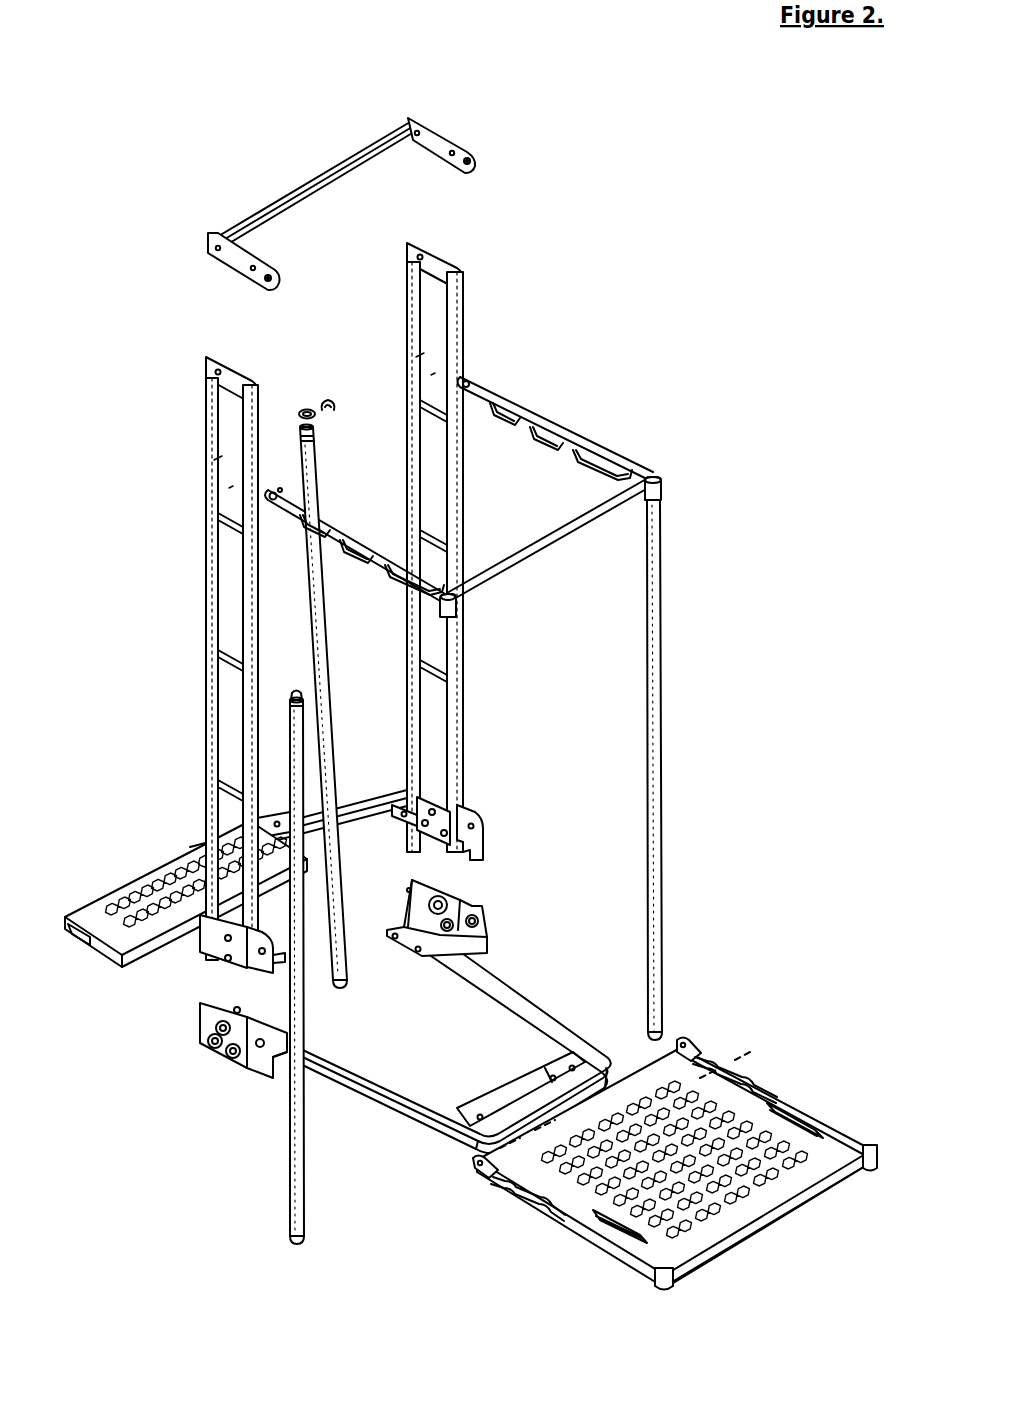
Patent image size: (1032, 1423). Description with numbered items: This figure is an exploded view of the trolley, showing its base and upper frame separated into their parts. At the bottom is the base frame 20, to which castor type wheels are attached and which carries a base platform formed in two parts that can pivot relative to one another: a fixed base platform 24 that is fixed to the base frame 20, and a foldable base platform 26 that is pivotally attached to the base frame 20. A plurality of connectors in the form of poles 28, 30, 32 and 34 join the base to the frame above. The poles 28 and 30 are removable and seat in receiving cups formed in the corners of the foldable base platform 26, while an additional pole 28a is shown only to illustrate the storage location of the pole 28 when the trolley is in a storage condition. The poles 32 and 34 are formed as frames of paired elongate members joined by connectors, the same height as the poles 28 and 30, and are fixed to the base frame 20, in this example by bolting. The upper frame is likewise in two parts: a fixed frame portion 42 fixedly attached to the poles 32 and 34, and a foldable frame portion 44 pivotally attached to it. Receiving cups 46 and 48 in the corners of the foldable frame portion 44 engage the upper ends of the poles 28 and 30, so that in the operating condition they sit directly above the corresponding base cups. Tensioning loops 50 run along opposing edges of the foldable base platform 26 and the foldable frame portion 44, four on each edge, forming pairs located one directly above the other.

The base frame 20 is at (405, 1118).
The fixed base platform 24 is at (115, 933).
The foldable base platform 26 is at (653, 1237).
The pole 28 is at (295, 1140).
The additional pole 28a is at (340, 938).
The pole 30 is at (655, 838).
The pole 32 is at (450, 335).
The pole 34 is at (208, 587).
The fixed frame portion 42 is at (302, 188).
The foldable frame portion 44 is at (568, 428).
The receiving cup 46 is at (450, 610).
The receiving cup 48 is at (660, 490).
The tensioning loops 50 is at (540, 440).